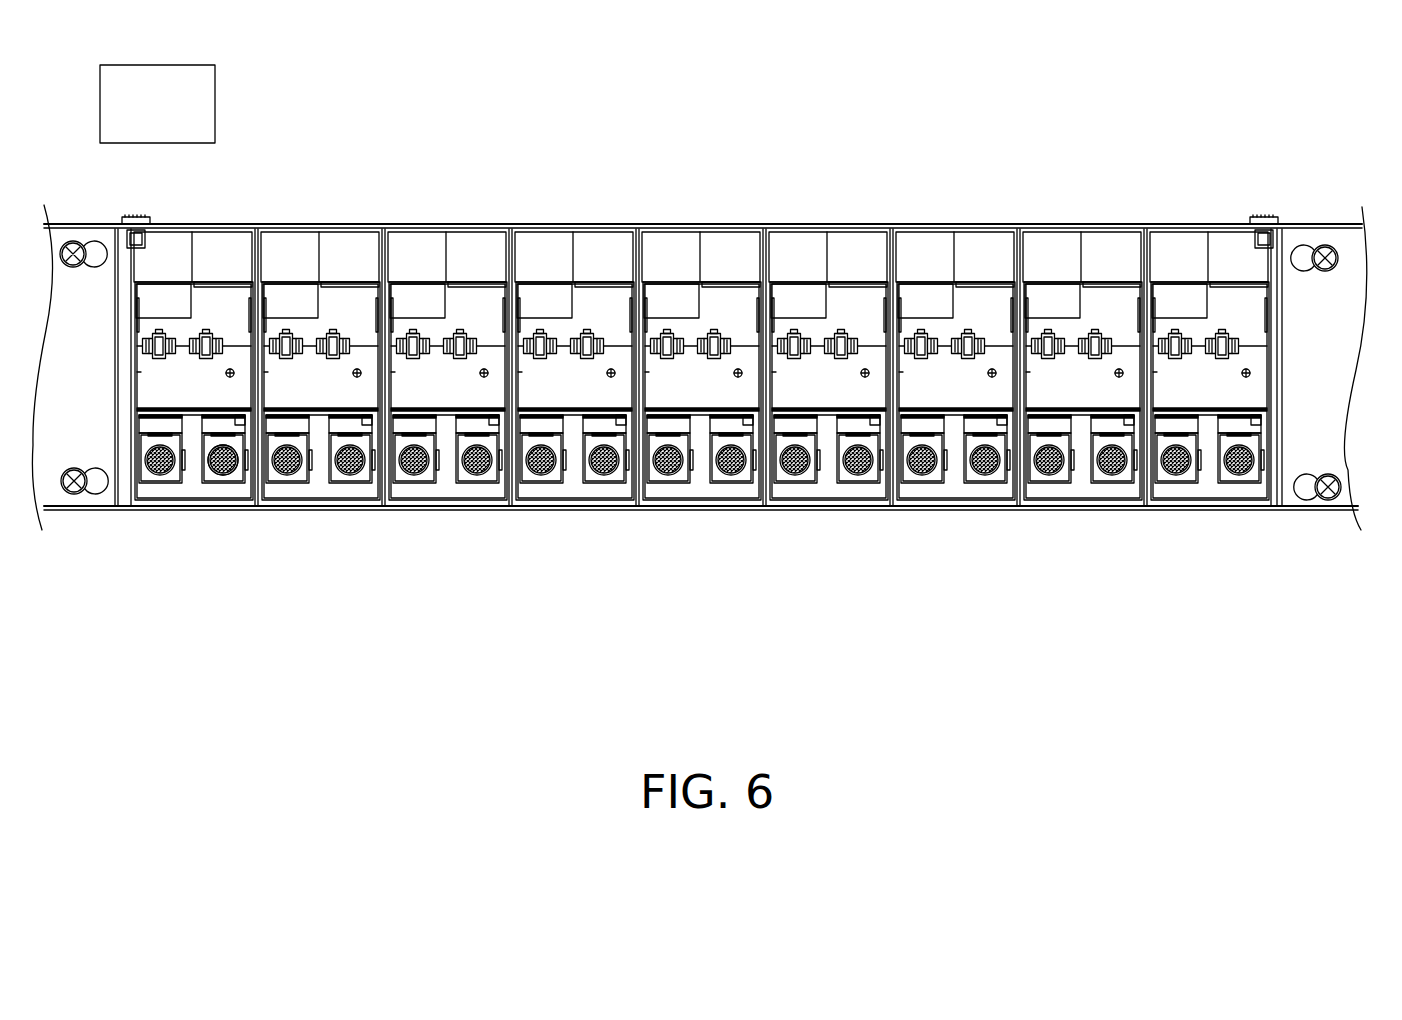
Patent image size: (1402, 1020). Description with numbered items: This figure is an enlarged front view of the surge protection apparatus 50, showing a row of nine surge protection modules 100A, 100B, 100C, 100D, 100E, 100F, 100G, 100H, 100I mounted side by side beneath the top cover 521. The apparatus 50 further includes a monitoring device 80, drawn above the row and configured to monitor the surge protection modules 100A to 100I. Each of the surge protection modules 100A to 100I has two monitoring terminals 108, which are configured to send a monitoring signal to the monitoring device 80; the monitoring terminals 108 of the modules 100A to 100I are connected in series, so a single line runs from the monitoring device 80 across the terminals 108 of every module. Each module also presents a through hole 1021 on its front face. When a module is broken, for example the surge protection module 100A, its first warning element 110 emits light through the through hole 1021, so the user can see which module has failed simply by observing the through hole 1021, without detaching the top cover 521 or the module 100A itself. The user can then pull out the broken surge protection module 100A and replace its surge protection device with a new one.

The surge protection apparatus 50 is at (708, 213).
The top cover 521 is at (510, 225).
The monitoring device 80 is at (158, 334).
The monitoring terminal 108 is at (205, 333).
The first warning element 110 is at (222, 455).
The through hole 1021 is at (232, 476).
The surge protection module 100A is at (195, 399).
The surge protection module 100B is at (322, 513).
The surge protection module 100C is at (449, 513).
The surge protection module 100D is at (576, 513).
The surge protection module 100E is at (703, 513).
The surge protection module 100F is at (830, 513).
The surge protection module 100G is at (957, 513).
The surge protection module 100H is at (1084, 513).
The surge protection module 100I is at (1211, 513).